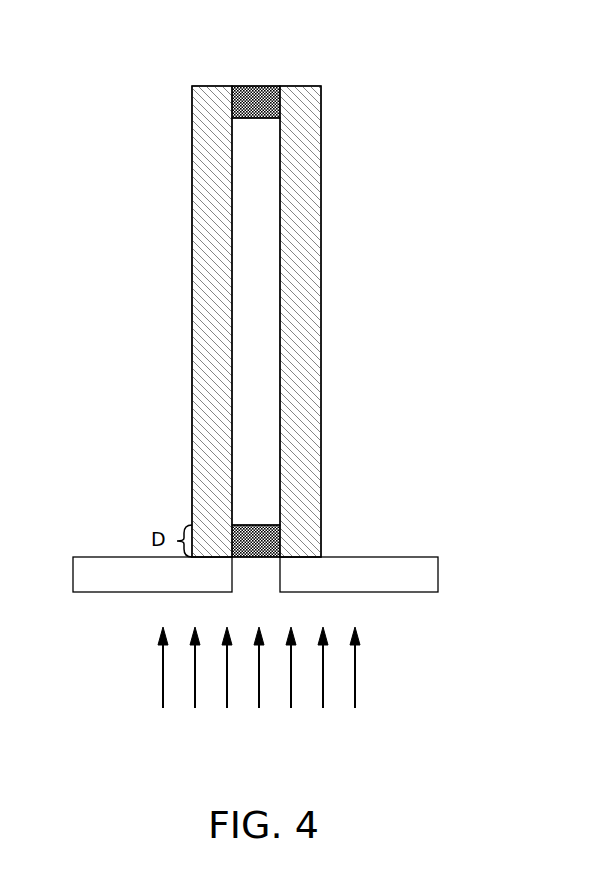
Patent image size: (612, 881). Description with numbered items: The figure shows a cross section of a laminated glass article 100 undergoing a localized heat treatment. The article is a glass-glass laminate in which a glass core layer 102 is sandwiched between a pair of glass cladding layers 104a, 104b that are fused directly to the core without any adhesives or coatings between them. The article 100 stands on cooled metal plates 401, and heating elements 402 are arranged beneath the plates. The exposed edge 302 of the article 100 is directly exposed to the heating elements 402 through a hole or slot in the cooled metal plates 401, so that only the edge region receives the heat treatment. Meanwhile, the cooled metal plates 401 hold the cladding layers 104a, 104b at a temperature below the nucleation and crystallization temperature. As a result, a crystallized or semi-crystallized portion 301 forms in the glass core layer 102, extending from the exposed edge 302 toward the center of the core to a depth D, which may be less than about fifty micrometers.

The laminated glass article 100 is at (332, 78).
The glass cladding layer 104b is at (206, 171).
The glass cladding layer 104a is at (322, 158).
The glass core layer 102 is at (268, 303).
The crystallized or semi-crystallized portion 301 is at (267, 98).
The exposed edge 302 is at (298, 557).
The cooled metal plates 401 is at (423, 573).
The heating elements 402 is at (259, 687).